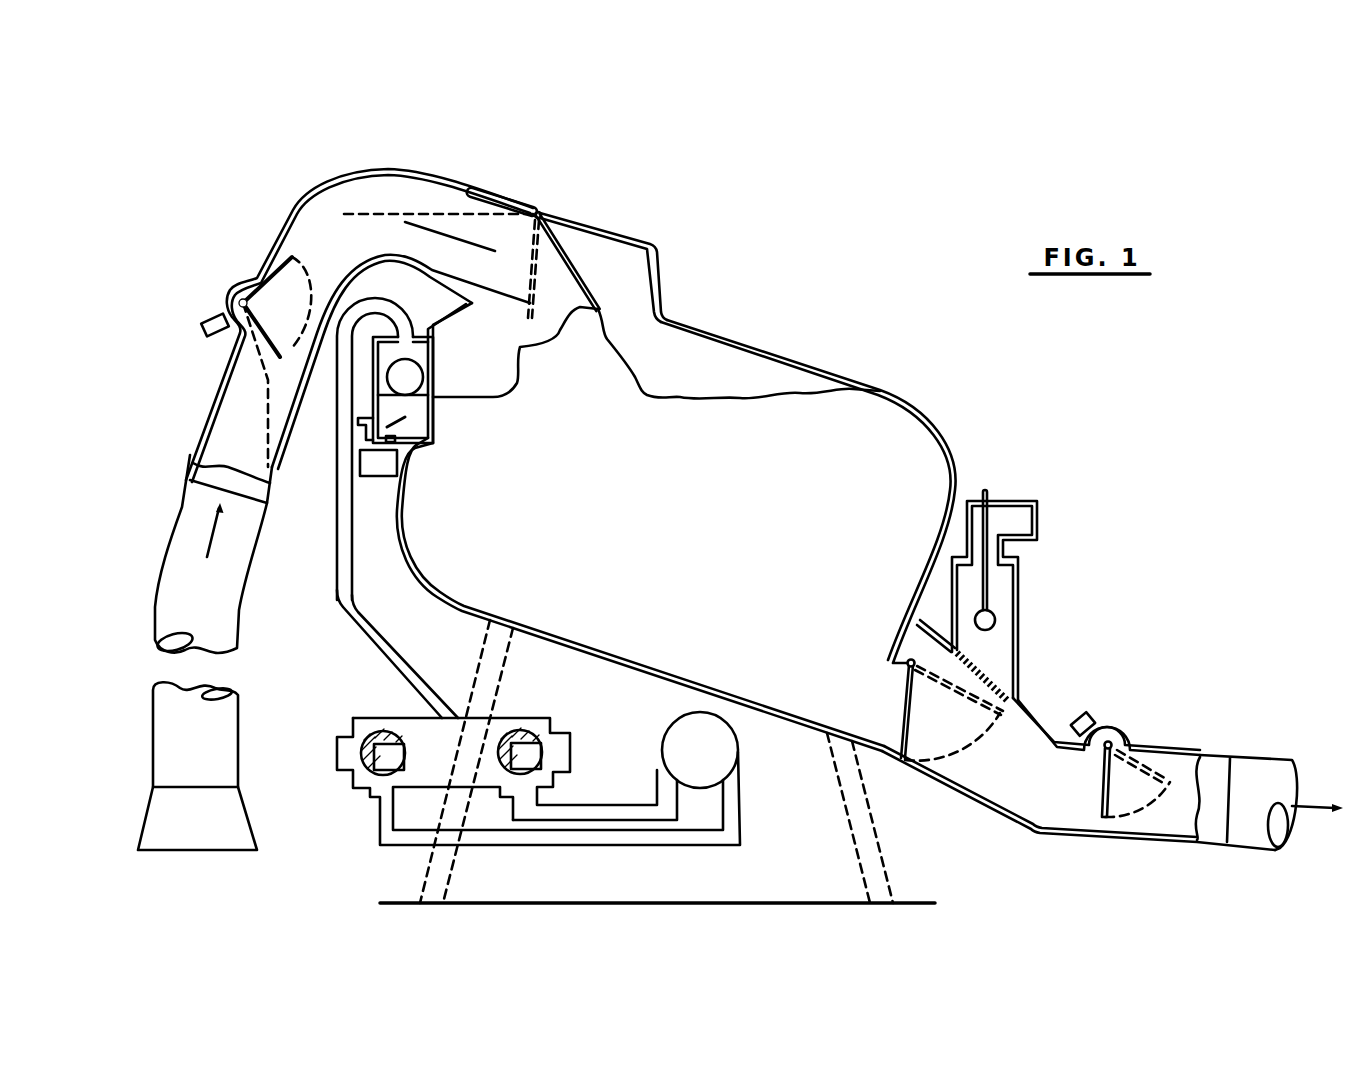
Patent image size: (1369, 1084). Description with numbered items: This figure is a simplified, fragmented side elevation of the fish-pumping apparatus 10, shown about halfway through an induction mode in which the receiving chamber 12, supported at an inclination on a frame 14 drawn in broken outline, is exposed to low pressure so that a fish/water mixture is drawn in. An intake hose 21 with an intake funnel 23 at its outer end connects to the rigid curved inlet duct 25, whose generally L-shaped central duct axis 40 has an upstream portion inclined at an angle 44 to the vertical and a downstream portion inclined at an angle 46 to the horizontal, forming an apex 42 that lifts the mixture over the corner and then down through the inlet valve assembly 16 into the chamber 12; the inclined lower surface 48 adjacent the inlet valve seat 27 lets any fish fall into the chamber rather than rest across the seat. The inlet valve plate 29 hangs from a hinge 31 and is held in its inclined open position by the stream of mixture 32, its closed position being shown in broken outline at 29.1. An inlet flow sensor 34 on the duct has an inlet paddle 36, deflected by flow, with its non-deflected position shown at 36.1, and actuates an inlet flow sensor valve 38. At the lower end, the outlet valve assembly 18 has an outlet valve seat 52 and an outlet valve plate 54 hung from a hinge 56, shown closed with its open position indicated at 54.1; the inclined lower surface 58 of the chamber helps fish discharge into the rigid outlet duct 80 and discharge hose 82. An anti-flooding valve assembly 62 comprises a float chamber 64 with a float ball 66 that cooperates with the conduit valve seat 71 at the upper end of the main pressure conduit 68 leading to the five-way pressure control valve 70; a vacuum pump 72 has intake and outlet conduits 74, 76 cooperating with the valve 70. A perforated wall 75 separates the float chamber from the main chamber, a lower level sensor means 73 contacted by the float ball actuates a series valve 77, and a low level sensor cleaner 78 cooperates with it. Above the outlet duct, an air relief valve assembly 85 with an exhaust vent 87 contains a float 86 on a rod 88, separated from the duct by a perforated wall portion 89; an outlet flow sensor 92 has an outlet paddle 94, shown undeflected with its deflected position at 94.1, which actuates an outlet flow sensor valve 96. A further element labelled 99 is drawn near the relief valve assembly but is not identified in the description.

The apparatus 10 is at (762, 238).
The receiving chamber 12 is at (762, 344).
The frame 14 is at (490, 657).
The inlet valve assembly 16 is at (576, 251).
The outlet valve assembly 18 is at (888, 683).
The intake hose 21 is at (207, 620).
The intake funnel 23 is at (222, 825).
The rigid curved inlet duct 25 is at (417, 168).
The inlet valve seat 27 is at (553, 330).
The inlet valve plate 29 is at (580, 260).
The closed position of inlet valve plate 29.1 is at (520, 252).
The hinge 31 is at (539, 210).
The stream of mixture 32 is at (642, 378).
The inlet flow sensor 34 is at (232, 292).
The inlet paddle 36 is at (272, 236).
The non-deflected position of inlet paddle 36.1 is at (236, 370).
The inlet flow sensor valve 38 is at (224, 336).
The central duct axis 40 is at (340, 213).
The apex 42 is at (356, 258).
The angle 44 is at (243, 450).
The angle 46 is at (448, 240).
The lower surface of the duct 48 is at (520, 293).
The outlet valve seat 52 is at (913, 716).
The outlet valve plate 54 is at (905, 700).
The open position of outlet valve plate 54.1 is at (996, 715).
The hinge 56 is at (910, 634).
The lower surface of the chamber 58 is at (860, 742).
The anti-flooding valve assembly 62 is at (445, 406).
The float chamber 64 is at (435, 422).
The float ball 66 is at (412, 372).
The main pressure conduit 68 is at (346, 545).
The 5-way pressure control valve 70 is at (380, 708).
The conduit valve seat 71 is at (414, 340).
The vacuum pump 72 is at (725, 757).
The lower level sensor means 73 is at (405, 427).
The intake conduit 74 is at (610, 842).
The wall of the float chamber 75 is at (436, 390).
The outlet conduit 76 is at (628, 774).
The level sensor valve 77 is at (400, 478).
The low level sensor cleaner 78 is at (358, 422).
The rigid outlet duct 80 is at (1043, 836).
The discharge hose 82 is at (1258, 770).
The air relief valve assembly 85 is at (1026, 606).
The float 86 is at (992, 620).
The exhaust vent 87 is at (1033, 522).
The rod 88 is at (990, 598).
The perforated portion of outlet duct wall 89 is at (980, 655).
The outlet flow sensor 92 is at (1127, 732).
The outlet paddle 94 is at (1102, 780).
The deflected position of outlet paddle 94.1 is at (1168, 758).
The outlet flow sensor valve 96 is at (1095, 715).
The sensor housing wall 99 is at (1026, 573).